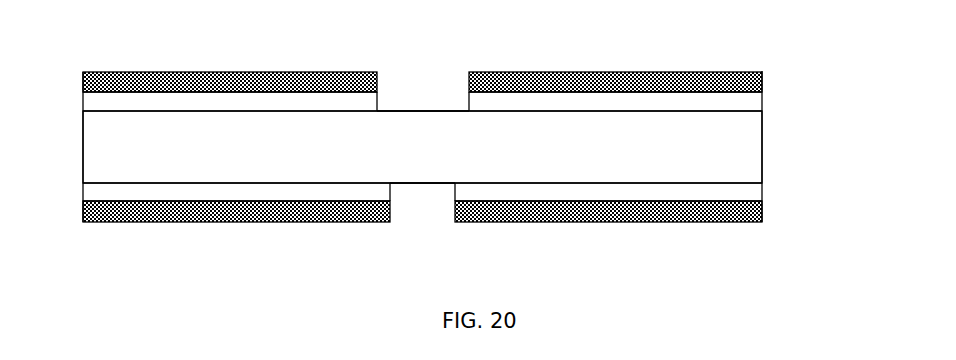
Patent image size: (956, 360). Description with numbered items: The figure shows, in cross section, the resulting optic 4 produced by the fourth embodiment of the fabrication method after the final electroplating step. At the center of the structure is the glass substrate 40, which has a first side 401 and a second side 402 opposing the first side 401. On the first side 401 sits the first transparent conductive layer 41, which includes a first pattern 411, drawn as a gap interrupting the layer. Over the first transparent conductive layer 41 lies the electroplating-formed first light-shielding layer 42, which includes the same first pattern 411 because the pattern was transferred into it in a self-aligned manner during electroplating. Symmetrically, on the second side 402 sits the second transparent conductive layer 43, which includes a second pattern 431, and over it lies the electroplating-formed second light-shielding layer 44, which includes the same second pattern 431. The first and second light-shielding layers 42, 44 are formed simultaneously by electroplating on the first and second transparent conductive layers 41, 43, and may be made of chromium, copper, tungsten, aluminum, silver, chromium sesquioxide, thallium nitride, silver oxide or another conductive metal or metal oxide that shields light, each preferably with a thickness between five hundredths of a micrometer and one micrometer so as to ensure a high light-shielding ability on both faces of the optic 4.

The optic 4 is at (188, 45).
The glass substrate 40 is at (742, 163).
The first side 401 is at (750, 104).
The second side 402 is at (725, 189).
The first transparent conductive layer 41 is at (677, 105).
The first pattern 411 is at (410, 96).
The first light-shielding layer 42 is at (743, 75).
The second transparent conductive layer 43 is at (632, 190).
The second pattern 431 is at (417, 197).
The second light-shielding layer 44 is at (724, 213).